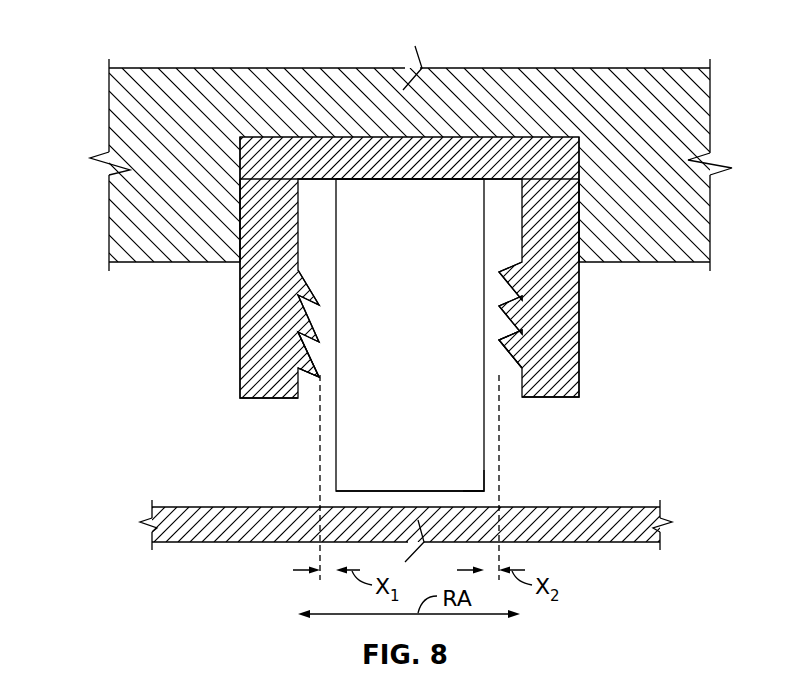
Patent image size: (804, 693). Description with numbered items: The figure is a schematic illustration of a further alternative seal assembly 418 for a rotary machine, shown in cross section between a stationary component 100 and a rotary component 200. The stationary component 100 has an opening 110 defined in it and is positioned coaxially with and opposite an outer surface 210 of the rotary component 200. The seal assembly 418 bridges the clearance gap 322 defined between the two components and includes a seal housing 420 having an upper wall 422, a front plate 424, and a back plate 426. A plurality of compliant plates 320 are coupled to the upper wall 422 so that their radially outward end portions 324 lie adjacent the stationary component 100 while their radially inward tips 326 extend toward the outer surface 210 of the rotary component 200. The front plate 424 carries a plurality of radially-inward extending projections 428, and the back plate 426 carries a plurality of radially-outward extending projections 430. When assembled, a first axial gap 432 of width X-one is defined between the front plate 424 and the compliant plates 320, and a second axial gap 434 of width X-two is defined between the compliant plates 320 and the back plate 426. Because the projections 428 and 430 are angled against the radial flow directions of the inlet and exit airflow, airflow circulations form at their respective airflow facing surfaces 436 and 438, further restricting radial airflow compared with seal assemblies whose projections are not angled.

The seal assembly 418 is at (128, 44).
The stationary component 100 is at (389, 121).
The opening 110 is at (535, 136).
The seal housing 420 is at (588, 280).
The upper wall 422 is at (389, 168).
The front plate 424 is at (247, 235).
The back plate 426 is at (528, 232).
The radially-inward extending projections 428 is at (305, 350).
The radially-outward extending projections 430 is at (517, 362).
The first axial gap 432 is at (330, 395).
The second axial gap 434 is at (490, 384).
The airflow facing surface 436 is at (306, 372).
The airflow facing surface 438 is at (513, 340).
The compliant plates 320 is at (389, 405).
The clearance gap 322 is at (480, 498).
The radially outward end portions 324 is at (412, 180).
The radially inward tips 326 is at (410, 490).
The rotary component 200 is at (660, 542).
The outer surface 210 is at (588, 507).